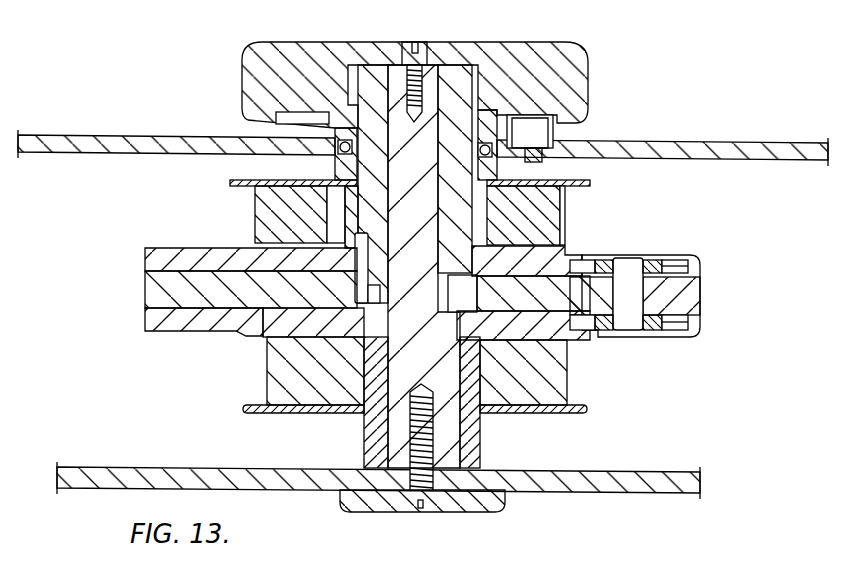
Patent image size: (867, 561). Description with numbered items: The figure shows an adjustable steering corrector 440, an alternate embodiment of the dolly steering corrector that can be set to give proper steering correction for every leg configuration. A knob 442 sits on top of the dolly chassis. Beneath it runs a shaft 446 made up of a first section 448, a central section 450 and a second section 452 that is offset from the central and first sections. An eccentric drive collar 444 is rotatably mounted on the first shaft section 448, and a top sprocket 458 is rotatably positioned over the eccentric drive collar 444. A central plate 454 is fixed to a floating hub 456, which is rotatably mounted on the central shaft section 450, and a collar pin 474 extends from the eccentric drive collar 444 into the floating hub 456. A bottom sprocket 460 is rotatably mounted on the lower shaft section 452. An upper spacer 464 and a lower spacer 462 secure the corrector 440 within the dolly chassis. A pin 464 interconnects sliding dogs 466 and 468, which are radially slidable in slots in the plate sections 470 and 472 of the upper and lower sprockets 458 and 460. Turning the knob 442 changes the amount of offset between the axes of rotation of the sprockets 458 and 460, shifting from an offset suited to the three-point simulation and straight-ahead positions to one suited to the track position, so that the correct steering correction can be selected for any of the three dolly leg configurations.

The adjustable steering corrector 440 is at (646, 30).
The knob 442 is at (282, 42).
The eccentric drive collar 444 is at (355, 207).
The shaft 446 is at (427, 219).
The first shaft section 448 is at (427, 170).
The central shaft section 450 is at (430, 292).
The second shaft section 452 is at (448, 430).
The central plate 454 is at (157, 288).
The floating hub 456 is at (290, 335).
The top sprocket 458 is at (255, 203).
The bottom sprocket 460 is at (283, 378).
The lower spacer 462 is at (378, 444).
The upper spacer 464 is at (333, 165).
The sliding dog 466 is at (648, 328).
The sliding dog 468 is at (697, 267).
The plate section 470 is at (145, 255).
The plate section 472 is at (150, 320).
The collar pin 474 is at (258, 248).